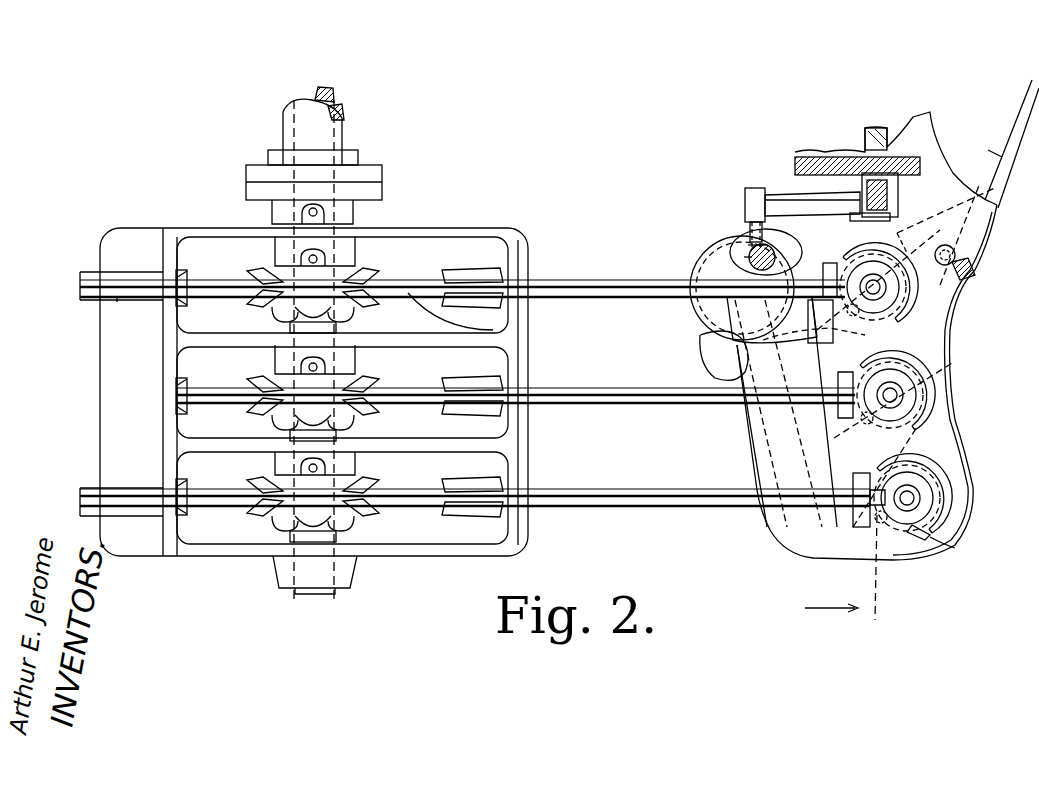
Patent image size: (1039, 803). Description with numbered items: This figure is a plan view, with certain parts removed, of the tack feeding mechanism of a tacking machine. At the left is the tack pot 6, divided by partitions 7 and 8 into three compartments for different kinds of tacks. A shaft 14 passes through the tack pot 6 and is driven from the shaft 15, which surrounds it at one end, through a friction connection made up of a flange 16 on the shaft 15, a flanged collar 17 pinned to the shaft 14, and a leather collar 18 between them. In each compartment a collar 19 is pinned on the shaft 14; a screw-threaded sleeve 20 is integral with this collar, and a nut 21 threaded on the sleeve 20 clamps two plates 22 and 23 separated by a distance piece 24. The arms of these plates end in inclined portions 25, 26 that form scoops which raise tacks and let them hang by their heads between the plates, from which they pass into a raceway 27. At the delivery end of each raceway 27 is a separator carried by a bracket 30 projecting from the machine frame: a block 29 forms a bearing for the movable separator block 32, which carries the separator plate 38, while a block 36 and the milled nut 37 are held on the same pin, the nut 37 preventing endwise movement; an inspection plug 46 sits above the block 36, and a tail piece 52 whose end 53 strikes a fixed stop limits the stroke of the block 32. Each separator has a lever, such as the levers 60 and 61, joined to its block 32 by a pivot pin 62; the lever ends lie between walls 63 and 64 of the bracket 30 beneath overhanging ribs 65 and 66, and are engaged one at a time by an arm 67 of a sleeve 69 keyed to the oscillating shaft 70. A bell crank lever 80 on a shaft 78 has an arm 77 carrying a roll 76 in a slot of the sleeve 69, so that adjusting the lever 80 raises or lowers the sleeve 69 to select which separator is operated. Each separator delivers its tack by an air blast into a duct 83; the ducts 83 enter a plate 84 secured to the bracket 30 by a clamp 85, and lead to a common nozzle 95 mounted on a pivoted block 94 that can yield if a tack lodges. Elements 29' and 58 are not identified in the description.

The tack pot 6 is at (467, 227).
The partition 7 is at (237, 345).
The partition 8 is at (220, 447).
The shaft 14 is at (336, 110).
The shaft 15 is at (336, 138).
The flange 16 is at (365, 173).
The flanged collar 17 is at (376, 196).
The leather collar 18 is at (383, 187).
The collar 19 is at (345, 263).
The screw-threaded sleeve 20 is at (300, 322).
The nut 21 is at (290, 304).
The plate 22 is at (390, 280).
The plate 23 is at (493, 330).
The distance piece 24 is at (220, 283).
The inclined portion 25 is at (477, 277).
The inclined portion 26 is at (493, 298).
The raceway 27 is at (577, 283).
The block 29 is at (949, 493).
The roller rim tab 29' is at (965, 552).
The bracket 30 is at (942, 427).
The movable separator block 32 is at (920, 533).
The block 36 is at (897, 543).
The milled nut 37 is at (915, 392).
The separator plate 38 is at (933, 486).
The inspection plug 46 is at (877, 503).
The tail piece 52 is at (937, 452).
The end of tail piece 53 is at (867, 460).
The frame edge 58 is at (823, 527).
The lever 60 is at (873, 423).
The lever 61 is at (743, 387).
The pivot pin 62 is at (850, 579).
The wall 63 is at (760, 306).
The wall 64 is at (730, 363).
The overhanging rib 65 is at (763, 340).
The overhanging rib 66 is at (730, 280).
The arm 67 is at (703, 272).
The sleeve 69 is at (782, 251).
The shaft 70 is at (767, 243).
The roll 76 is at (750, 253).
The arm 77 is at (807, 200).
The shaft 78 is at (873, 138).
The bell crank lever 80 is at (880, 197).
The duct 83 is at (925, 336).
The plate 84 is at (958, 208).
The clamp 85 is at (977, 272).
The block 94 is at (1010, 133).
The duct 95 is at (1023, 110).